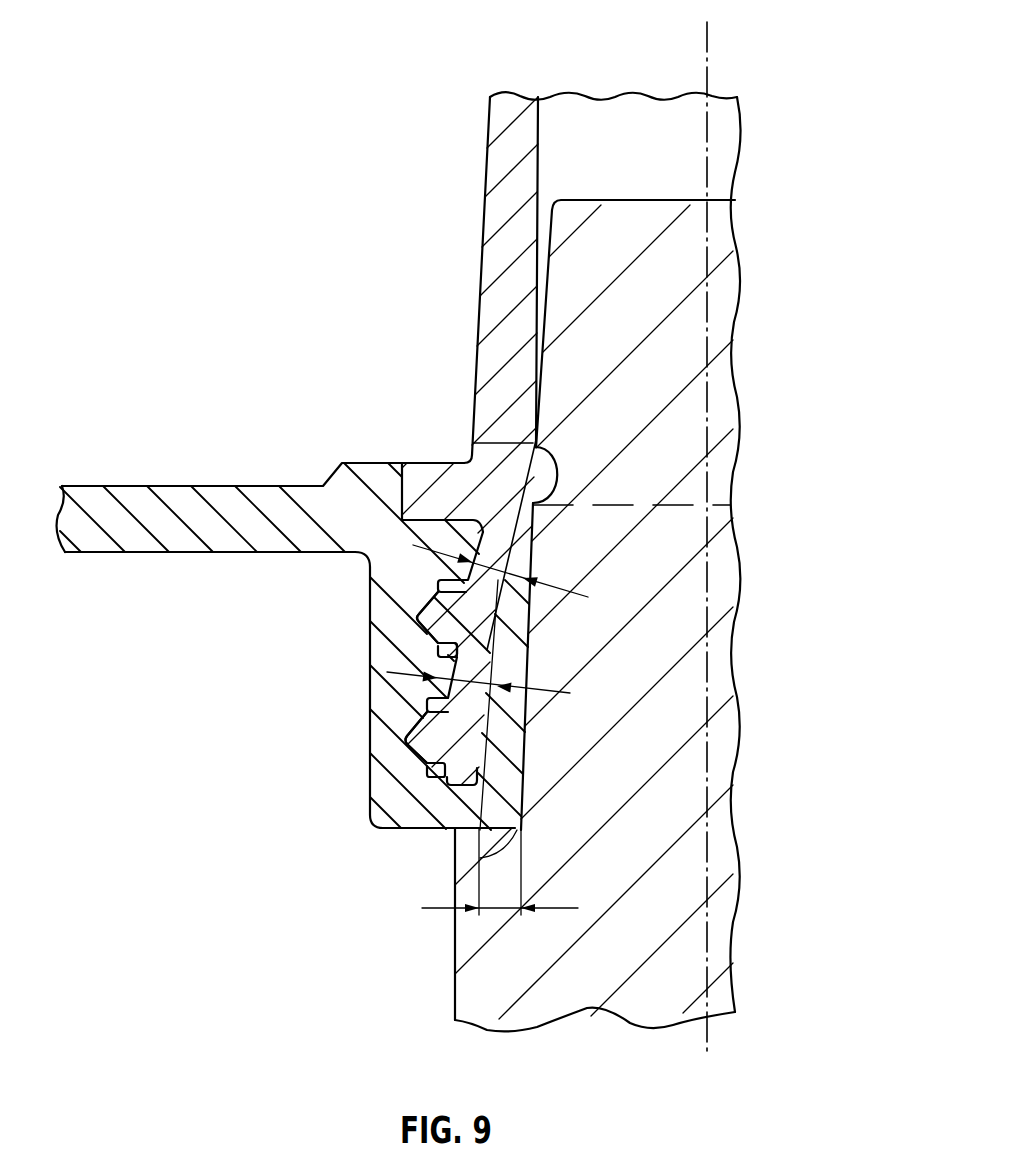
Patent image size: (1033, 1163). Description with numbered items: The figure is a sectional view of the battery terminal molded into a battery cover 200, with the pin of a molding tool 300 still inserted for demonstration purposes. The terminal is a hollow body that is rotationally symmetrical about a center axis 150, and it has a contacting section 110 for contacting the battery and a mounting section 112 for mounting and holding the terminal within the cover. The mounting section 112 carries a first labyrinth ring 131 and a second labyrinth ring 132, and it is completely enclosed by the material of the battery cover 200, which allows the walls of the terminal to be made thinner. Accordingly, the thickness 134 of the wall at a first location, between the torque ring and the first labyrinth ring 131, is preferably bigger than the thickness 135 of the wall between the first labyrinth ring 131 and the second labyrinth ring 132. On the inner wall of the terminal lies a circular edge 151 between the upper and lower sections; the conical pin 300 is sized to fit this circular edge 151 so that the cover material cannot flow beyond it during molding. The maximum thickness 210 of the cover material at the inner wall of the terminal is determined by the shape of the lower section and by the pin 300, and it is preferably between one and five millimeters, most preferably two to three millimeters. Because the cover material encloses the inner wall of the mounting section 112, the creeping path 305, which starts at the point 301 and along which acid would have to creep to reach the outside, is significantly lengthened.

The contacting section 110 is at (479, 301).
The mounting section 112 is at (398, 653).
The first labyrinth ring 131 is at (418, 616).
The second labyrinth ring 132 is at (410, 738).
The thickness of the wall at a first location 134 is at (562, 585).
The thickness of the walls between the labyrinth rings 135 is at (555, 690).
The center axis 150 is at (707, 23).
The circular edge 151 is at (672, 505).
The battery cover 200 is at (212, 486).
The maximum thickness of the material of the battery cover 210 is at (440, 912).
The pin of a molding tool 300 is at (629, 200).
The point 301 is at (473, 443).
The creeping path 305 is at (480, 858).